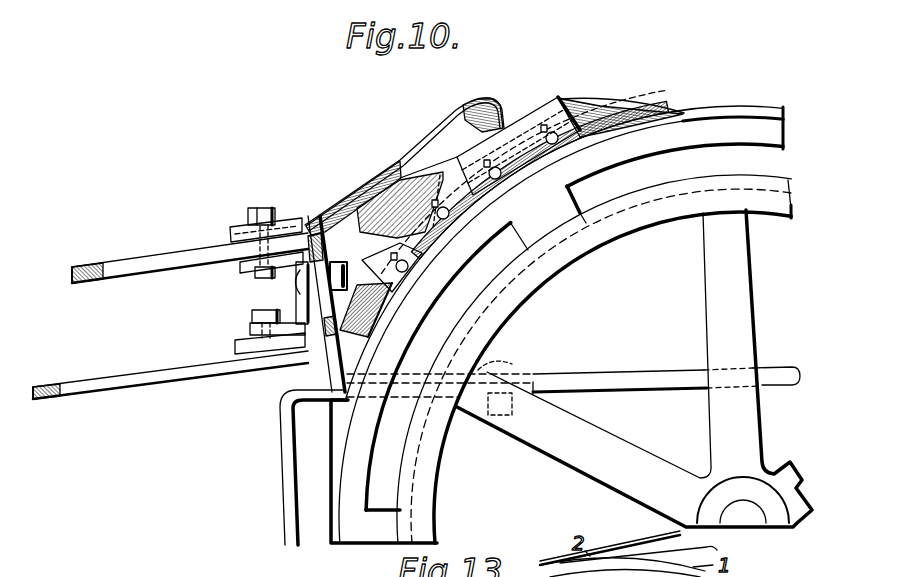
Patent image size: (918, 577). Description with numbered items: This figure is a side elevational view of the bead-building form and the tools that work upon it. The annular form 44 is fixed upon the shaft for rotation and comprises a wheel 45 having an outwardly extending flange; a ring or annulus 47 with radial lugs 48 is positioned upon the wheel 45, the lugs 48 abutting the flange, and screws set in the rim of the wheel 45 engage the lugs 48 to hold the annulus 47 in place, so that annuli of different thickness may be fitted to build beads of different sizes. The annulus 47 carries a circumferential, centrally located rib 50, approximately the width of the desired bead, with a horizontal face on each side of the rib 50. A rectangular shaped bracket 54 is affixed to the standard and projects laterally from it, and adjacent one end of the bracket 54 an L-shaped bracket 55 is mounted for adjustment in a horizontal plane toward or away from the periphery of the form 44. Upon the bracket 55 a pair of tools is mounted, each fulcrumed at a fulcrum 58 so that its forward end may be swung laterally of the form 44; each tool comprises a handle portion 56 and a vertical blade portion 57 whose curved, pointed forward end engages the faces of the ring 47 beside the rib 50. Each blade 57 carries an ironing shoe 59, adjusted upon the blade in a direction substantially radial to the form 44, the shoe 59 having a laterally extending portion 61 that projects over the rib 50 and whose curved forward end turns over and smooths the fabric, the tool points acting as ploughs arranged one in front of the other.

The annular form 44 is at (634, 368).
The wheel 45 is at (442, 475).
The ring or annulus 47 is at (345, 487).
The radial lugs 48 is at (565, 200).
The circumferential rib 50 is at (338, 453).
The rectangular shaped bracket 54 is at (280, 447).
The L-shaped bracket 55 is at (333, 382).
The tool handle portion 56 is at (146, 262).
The vertical blade portion 57 is at (607, 112).
The fulcrum 58 is at (267, 196).
The ironing shoe 59 is at (558, 100).
The laterally extending portion 61 is at (518, 180).